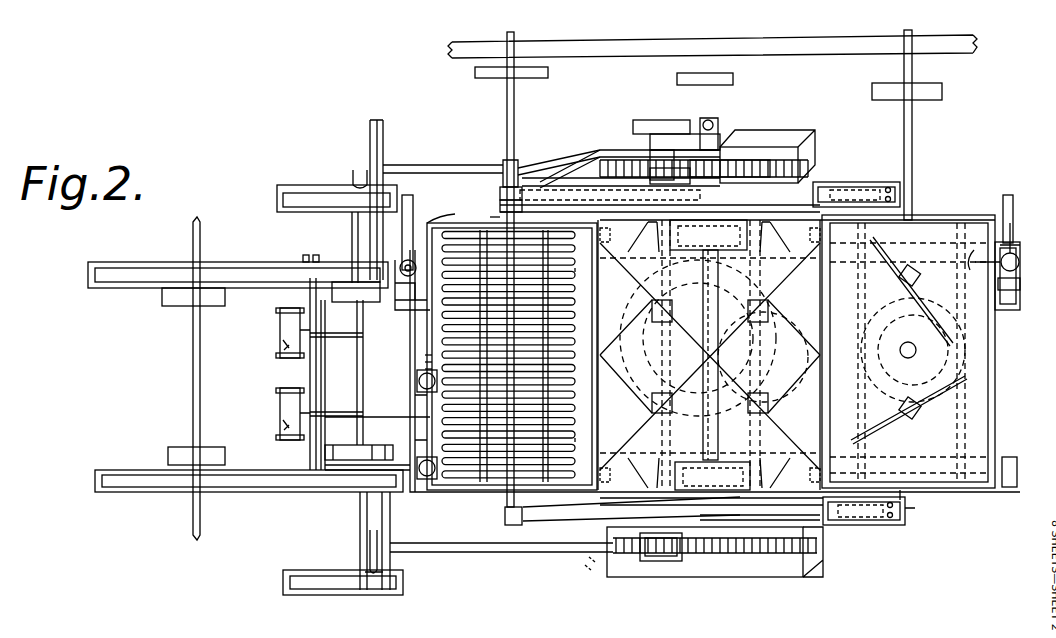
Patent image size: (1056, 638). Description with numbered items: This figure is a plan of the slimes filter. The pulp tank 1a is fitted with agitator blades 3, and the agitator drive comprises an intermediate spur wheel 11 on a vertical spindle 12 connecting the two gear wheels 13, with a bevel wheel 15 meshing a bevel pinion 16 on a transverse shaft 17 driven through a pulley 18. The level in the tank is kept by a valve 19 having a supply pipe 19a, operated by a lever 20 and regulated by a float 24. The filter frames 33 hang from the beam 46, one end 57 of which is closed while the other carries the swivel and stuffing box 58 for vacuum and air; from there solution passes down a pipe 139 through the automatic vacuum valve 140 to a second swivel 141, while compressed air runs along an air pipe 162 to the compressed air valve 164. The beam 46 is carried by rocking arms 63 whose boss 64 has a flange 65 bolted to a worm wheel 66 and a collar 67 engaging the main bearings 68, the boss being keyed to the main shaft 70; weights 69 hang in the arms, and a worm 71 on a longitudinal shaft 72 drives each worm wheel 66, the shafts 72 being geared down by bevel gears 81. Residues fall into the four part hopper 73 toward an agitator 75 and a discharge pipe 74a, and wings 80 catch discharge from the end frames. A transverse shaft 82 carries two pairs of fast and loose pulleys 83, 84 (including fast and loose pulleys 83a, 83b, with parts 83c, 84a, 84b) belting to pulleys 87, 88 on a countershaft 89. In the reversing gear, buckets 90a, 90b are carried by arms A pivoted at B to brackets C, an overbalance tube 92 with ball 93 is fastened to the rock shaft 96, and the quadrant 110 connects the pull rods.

The pulley 18 is at (928, 84).
The gear wheel 13 is at (985, 415).
The transverse shaft 17 is at (914, 168).
The countershaft 89 is at (193, 343).
The pulley 88 is at (218, 300).
The pulley 87 is at (200, 458).
The transverse shaft 82 is at (358, 527).
The bevel gear 81 is at (357, 172).
The longitudinal shaft 72 is at (438, 160).
The pair of pulleys 84 is at (355, 300).
The lug 84a is at (336, 286).
The lug 84b is at (350, 285).
The overbalance tube 92 is at (284, 329).
The ball 93 is at (277, 356).
The rock shaft 96 is at (336, 373).
The pair of pulleys 83 is at (352, 452).
The fast pulley 83a is at (379, 440).
The loose pulley 83b is at (339, 440).
The block part 83c is at (398, 440).
The supply pipe 19a is at (413, 210).
The valve 19 is at (1031, 262).
The float 24 is at (398, 305).
The filter frame 33 is at (440, 320).
The agitator blade 3 is at (1033, 391).
The bucket 90a is at (413, 381).
The bucket 90b is at (416, 466).
The arm A is at (428, 343).
The pivot B is at (428, 352).
The bracket C is at (428, 362).
The quadrant 110 is at (445, 214).
The bevel wheel 15 is at (958, 196).
The beam 46 is at (500, 217).
The closed end 57 is at (517, 527).
The main shaft 70 is at (770, 290).
The four part hopper 73 is at (730, 357).
The agitator 75 is at (714, 355).
The wing 80 is at (710, 355).
The pulp tank 1a is at (908, 351).
The bevel pinion 16 is at (912, 268).
The lever 20 is at (972, 250).
The intermediate spur wheel 11 is at (920, 348).
The vertical spindle 12 is at (915, 358).
The compressed air valve 164 is at (505, 162).
The swivel and stuffing box 58 is at (502, 190).
The air pipe 162 is at (530, 165).
The pipe 139 is at (548, 178).
The automatic vacuum valve 140 is at (660, 125).
The second swivel 141 is at (716, 128).
The worm 71 is at (700, 170).
The boss 64 is at (720, 175).
The flange 65 is at (740, 178).
The worm wheel 66 is at (790, 135).
The collar 67 is at (800, 162).
The main bearing 68 is at (810, 180).
The rocking arm 63 is at (586, 170).
The weight 69 is at (872, 192).
The discharge pipe 74a is at (574, 565).